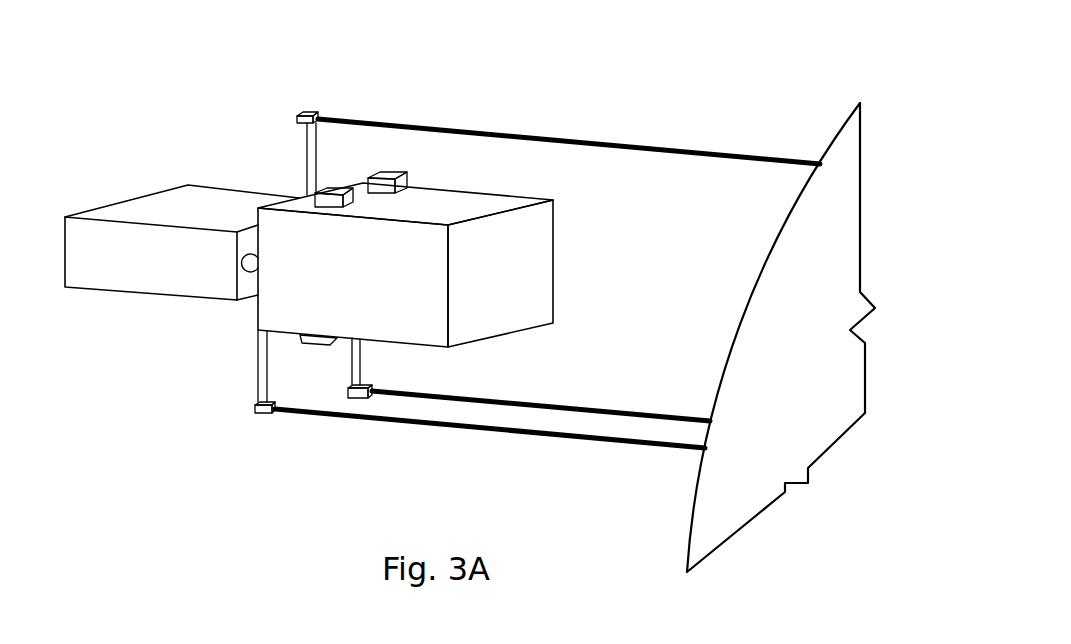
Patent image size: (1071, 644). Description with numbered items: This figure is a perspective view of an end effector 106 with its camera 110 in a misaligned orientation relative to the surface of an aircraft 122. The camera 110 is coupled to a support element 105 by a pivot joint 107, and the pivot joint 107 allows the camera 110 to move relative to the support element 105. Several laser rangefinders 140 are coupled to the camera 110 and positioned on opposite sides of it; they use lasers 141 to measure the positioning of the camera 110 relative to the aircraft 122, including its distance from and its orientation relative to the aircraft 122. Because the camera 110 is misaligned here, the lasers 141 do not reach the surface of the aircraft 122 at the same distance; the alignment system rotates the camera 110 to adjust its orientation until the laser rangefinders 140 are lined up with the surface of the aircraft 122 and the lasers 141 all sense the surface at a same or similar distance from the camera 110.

The support element 105 is at (188, 198).
The end effector 106 is at (251, 114).
The pivot joint 107 is at (250, 267).
The camera 110 is at (545, 287).
The aircraft 122 is at (835, 187).
The laser rangefinders 140 is at (313, 113).
The lasers 141 is at (445, 127).